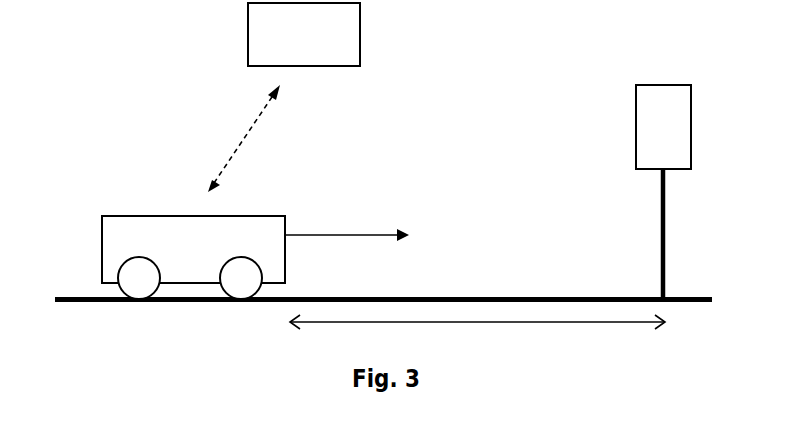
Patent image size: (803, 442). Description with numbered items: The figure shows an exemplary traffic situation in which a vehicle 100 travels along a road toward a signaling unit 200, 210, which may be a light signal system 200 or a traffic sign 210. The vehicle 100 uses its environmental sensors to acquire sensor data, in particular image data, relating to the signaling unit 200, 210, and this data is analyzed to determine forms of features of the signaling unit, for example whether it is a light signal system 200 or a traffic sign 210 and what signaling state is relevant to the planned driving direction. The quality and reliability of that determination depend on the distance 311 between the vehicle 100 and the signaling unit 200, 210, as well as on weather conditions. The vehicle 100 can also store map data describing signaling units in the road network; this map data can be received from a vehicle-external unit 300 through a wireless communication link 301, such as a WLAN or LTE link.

The vehicle 100 is at (109, 254).
The light signal system 200 is at (596, 191).
The traffic sign 210 is at (641, 132).
The vehicle-external unit 300 is at (252, 41).
The wireless communication link 301 is at (246, 142).
The distance 311 is at (378, 326).